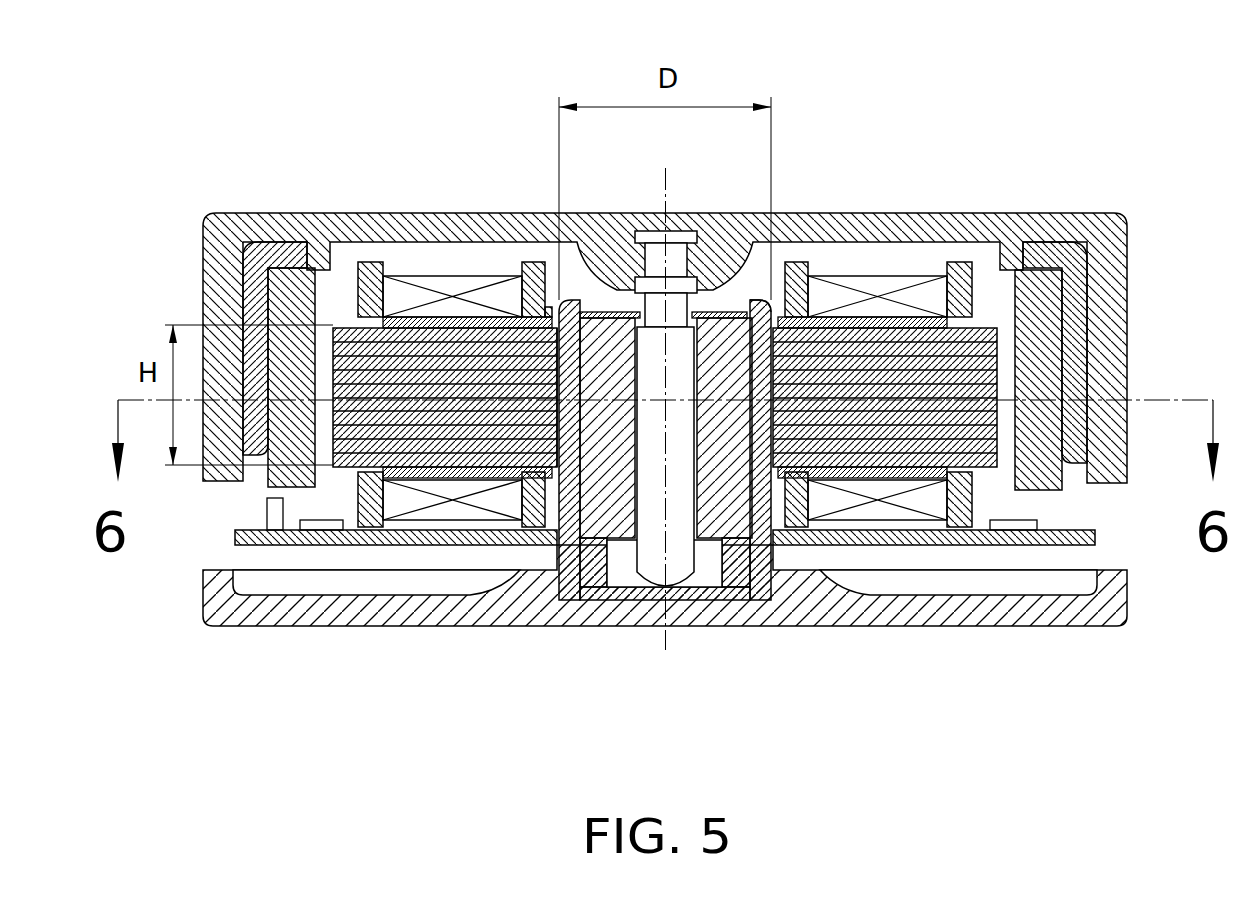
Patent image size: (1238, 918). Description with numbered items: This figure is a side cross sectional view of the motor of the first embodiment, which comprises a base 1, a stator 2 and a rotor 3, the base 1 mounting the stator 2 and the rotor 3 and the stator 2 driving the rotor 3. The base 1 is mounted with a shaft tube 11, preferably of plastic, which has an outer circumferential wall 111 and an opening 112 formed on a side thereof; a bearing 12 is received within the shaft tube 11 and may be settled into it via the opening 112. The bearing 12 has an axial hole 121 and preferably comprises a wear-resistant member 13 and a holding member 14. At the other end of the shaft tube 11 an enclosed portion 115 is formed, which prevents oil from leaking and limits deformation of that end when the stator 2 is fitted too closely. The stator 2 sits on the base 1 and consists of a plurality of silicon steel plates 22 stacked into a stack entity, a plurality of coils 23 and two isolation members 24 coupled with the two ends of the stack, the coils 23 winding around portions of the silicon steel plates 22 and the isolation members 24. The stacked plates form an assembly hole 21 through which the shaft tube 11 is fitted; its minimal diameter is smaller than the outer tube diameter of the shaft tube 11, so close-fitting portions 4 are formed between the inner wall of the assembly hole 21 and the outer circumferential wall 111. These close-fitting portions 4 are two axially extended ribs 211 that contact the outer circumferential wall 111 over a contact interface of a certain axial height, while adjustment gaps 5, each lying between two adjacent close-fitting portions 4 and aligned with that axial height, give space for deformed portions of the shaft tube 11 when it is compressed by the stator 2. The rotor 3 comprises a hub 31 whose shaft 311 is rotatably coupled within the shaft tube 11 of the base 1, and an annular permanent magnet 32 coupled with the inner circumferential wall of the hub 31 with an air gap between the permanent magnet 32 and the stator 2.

The base 1 is at (665, 630).
The shaft tube 11 is at (743, 411).
The outer circumferential wall 111 is at (838, 500).
The opening 112 is at (788, 180).
The enclosed portion 115 is at (665, 680).
The bearing 12 is at (710, 509).
The axial hole 121 is at (664, 633).
The wear-resistant member 13 is at (787, 646).
The holding member 14 is at (663, 225).
The stator 2 is at (584, 393).
The assembly hole 21 is at (605, 295).
The rib 211 is at (588, 626).
The silicon steel plates 22 is at (584, 431).
The coils 23 is at (665, 317).
The isolation members 24 is at (609, 408).
The rotor 3 is at (714, 408).
The hub 31 is at (665, 308).
The shaft 311 is at (709, 482).
The permanent magnet 32 is at (747, 379).
The close-fitting portions 4 is at (665, 580).
The adjustment gaps 5 is at (516, 226).